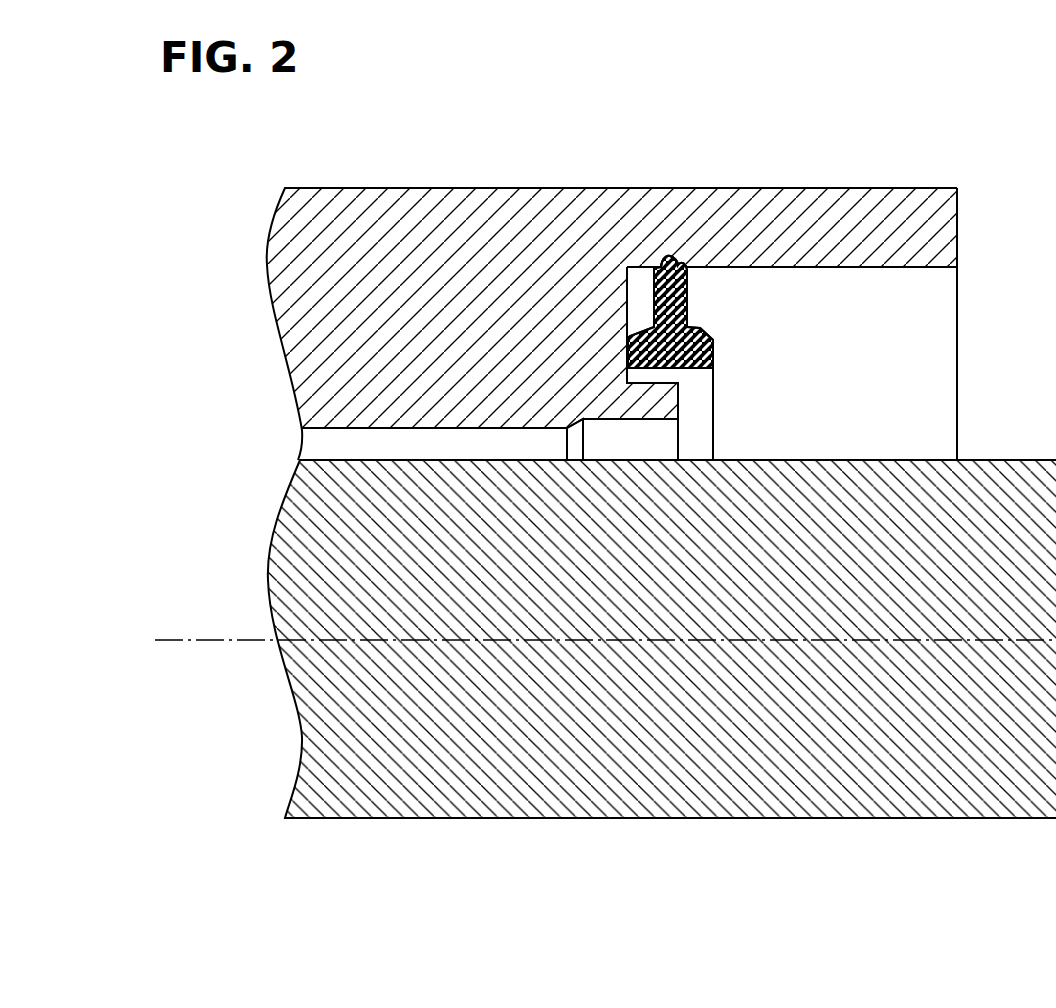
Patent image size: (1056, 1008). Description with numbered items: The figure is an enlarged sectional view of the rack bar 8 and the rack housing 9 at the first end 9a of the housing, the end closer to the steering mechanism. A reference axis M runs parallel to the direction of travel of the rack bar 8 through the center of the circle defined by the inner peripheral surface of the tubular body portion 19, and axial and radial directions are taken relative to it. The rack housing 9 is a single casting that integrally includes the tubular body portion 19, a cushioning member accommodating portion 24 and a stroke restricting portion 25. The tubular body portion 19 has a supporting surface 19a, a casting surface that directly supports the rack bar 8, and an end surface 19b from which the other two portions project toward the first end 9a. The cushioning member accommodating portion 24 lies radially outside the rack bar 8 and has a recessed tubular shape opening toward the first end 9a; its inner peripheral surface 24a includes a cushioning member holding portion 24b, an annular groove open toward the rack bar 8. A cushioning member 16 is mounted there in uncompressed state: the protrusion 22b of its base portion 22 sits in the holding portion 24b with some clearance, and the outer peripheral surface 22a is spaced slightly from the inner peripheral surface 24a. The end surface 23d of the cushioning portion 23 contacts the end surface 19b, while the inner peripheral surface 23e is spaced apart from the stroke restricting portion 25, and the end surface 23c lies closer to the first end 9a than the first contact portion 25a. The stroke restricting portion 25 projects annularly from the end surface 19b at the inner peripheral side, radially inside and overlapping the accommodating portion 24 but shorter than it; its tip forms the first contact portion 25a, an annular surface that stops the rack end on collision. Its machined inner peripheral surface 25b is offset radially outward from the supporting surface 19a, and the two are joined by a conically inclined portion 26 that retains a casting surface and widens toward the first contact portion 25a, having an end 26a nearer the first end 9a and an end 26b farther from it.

The rack bar 8 is at (930, 795).
The rack housing 9 is at (813, 90).
The first end 9a is at (957, 218).
The cushioning member 16 is at (749, 266).
The tubular body portion 19 is at (524, 265).
The supporting surface 19a is at (300, 430).
The end surface of tubular body portion 19b is at (637, 318).
The base portion 22 is at (688, 300).
The outer peripheral surface 22a is at (679, 260).
The protrusion 22b is at (688, 276).
The cushioning portion 23 is at (690, 323).
The end surface of cushioning portion 23c is at (713, 345).
The end surface of cushioning portion 23d is at (630, 335).
The inner peripheral surface of cushioning portion 23e is at (690, 369).
The cushioning member accommodating portion 24 is at (800, 240).
The inner peripheral surface 24a is at (923, 268).
The cushioning member holding portion 24b is at (662, 265).
The stroke restricting portion 25 is at (637, 403).
The first contact portion 25a is at (680, 393).
The inner peripheral surface of stroke restricting portion 25b is at (683, 425).
The inclined portion 26 is at (586, 435).
The end of inclined portion 26a is at (585, 425).
The end of inclined portion 26b is at (567, 432).
The reference axis M is at (222, 640).